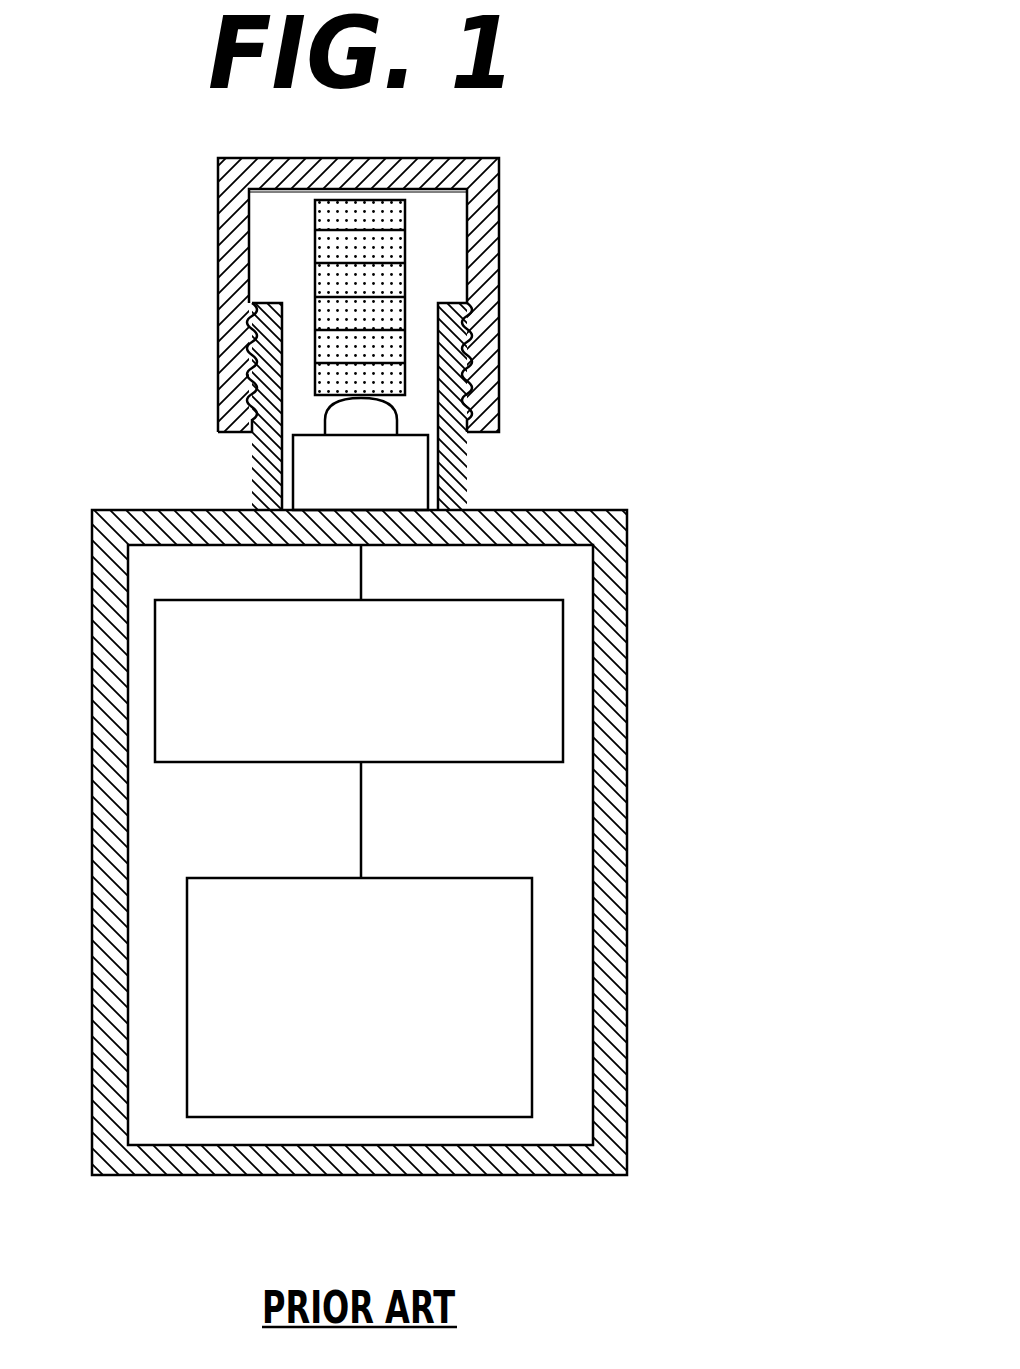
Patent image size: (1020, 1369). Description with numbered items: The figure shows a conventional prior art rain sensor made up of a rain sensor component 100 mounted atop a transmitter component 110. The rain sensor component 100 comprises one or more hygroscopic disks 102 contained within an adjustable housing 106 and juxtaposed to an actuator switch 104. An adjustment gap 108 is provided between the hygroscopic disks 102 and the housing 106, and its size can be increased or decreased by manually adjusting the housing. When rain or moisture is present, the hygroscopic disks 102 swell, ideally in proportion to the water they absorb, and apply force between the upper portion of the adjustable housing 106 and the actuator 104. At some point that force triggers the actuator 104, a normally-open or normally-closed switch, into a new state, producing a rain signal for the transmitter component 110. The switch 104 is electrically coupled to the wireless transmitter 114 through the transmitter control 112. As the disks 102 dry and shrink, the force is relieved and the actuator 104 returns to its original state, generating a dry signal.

The rain sensor component 100 is at (374, 287).
The hygroscopic disks 102 is at (397, 275).
The actuator switch 104 is at (398, 467).
The adjustable housing 106 is at (226, 351).
The adjustment gap 108 is at (320, 192).
The transmitter component 110 is at (435, 739).
The transmitter control 112 is at (563, 660).
The transmitter 114 is at (532, 963).